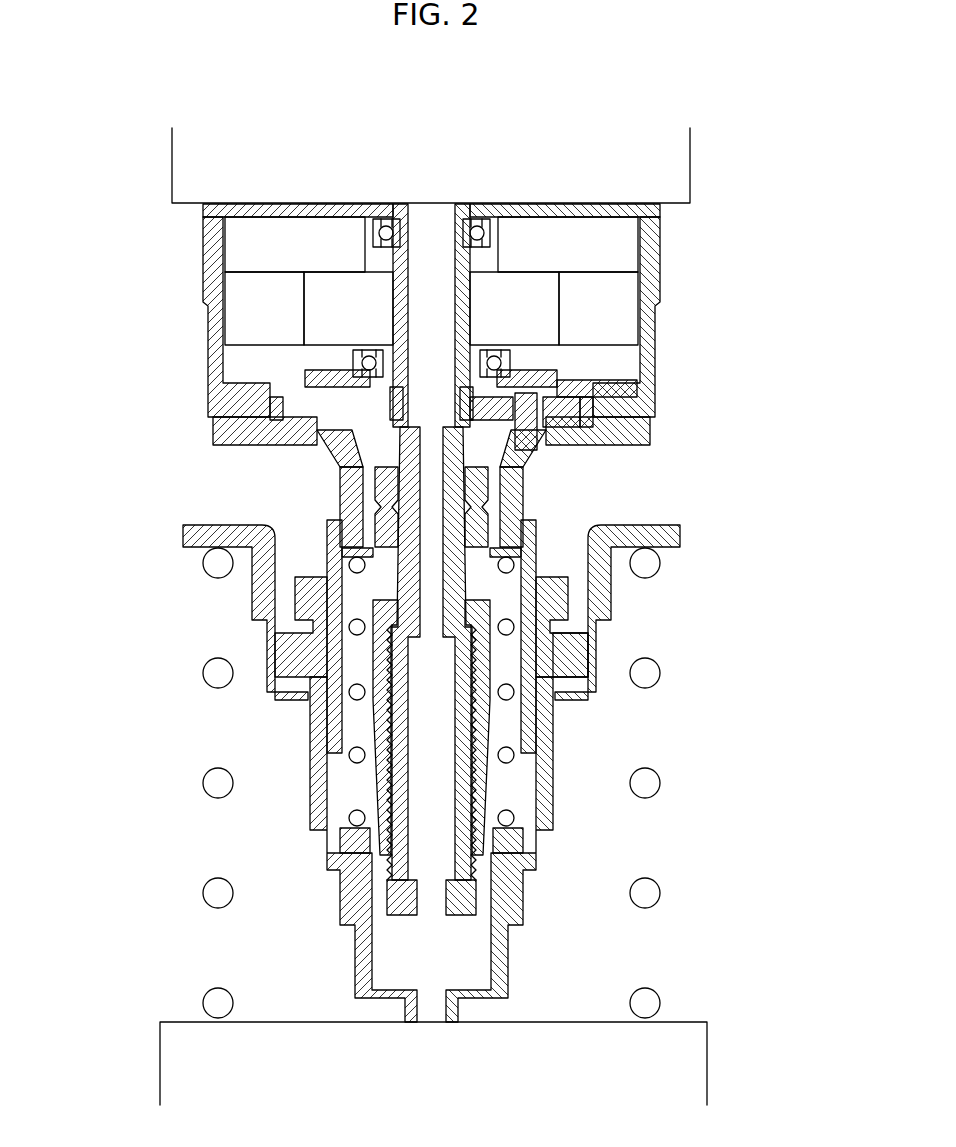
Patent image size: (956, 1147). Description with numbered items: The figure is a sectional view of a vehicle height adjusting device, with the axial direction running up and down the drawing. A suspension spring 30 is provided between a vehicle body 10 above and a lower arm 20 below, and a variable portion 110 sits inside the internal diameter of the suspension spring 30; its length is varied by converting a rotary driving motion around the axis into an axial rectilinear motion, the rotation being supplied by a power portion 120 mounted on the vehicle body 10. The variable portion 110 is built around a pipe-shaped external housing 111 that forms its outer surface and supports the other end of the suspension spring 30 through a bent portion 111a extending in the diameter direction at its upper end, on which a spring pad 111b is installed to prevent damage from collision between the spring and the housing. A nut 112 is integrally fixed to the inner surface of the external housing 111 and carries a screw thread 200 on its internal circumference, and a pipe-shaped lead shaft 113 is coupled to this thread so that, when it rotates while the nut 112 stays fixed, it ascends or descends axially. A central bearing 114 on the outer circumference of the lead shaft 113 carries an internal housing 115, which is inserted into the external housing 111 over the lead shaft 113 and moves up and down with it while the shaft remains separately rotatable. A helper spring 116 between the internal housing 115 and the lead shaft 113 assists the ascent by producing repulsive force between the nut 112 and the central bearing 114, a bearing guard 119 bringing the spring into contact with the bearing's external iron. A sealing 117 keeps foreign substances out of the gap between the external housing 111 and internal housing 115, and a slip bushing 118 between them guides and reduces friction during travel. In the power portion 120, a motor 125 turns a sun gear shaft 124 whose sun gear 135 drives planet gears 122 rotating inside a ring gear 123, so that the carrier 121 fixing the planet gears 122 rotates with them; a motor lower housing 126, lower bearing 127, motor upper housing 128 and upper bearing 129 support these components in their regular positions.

The vehicle body 10 is at (690, 162).
The lower arm 20 is at (707, 1075).
The suspension spring 30 is at (660, 895).
The variable portion 110 is at (409, 724).
The external housing 111 is at (318, 773).
The bent portion 111a is at (183, 530).
The spring pad 111b is at (253, 592).
The nut 112 is at (357, 840).
The lead shaft 113 is at (382, 705).
The central bearing 114 is at (340, 492).
The internal housing 115 is at (337, 643).
The helper spring 116 is at (507, 759).
The sealing 117 is at (550, 582).
The slip bushing 118 is at (540, 652).
The bearing guard 119 is at (540, 548).
The power portion 120 is at (448, 286).
The carrier 121 is at (312, 420).
The planet gears 122 is at (563, 413).
The ring gear 123 is at (593, 407).
The sun gear shaft 124 is at (458, 256).
The motor 125 is at (605, 310).
The motor lower housing 126 is at (650, 280).
The lower bearing 127 is at (355, 362).
The motor upper housing 128 is at (205, 222).
The upper bearing 129 is at (390, 215).
The sun gear 135 is at (392, 400).
The screw thread 200 is at (378, 856).